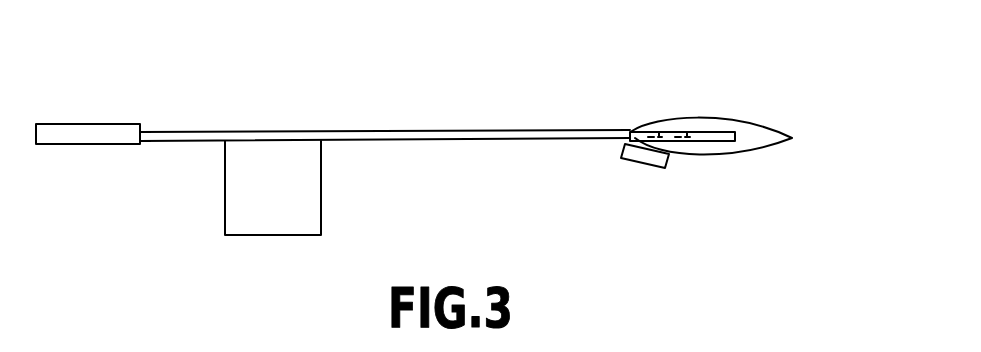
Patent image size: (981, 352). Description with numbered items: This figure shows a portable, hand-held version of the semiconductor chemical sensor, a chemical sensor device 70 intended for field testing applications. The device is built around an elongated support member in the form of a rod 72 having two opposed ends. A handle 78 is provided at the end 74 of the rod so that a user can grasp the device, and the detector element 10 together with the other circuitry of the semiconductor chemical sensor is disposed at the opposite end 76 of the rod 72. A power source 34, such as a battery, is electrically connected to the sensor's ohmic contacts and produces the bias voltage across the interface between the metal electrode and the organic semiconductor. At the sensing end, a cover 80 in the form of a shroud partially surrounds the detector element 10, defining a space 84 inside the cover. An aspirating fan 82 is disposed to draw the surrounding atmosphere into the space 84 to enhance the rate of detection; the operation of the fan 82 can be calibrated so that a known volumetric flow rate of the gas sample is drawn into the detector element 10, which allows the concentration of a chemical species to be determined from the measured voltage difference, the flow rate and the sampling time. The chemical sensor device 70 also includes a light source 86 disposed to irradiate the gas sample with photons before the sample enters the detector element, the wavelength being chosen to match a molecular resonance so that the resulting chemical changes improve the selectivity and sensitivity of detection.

The chemical sensor device 70 is at (477, 61).
The handle 78 is at (60, 124).
The end 74 is at (142, 132).
The rod 72 is at (490, 141).
The power source 34 is at (265, 220).
The end 76 is at (722, 145).
The cover 80 is at (763, 123).
The space 84 is at (757, 142).
The aspirating fan 82 is at (650, 167).
The detector element 10 is at (660, 132).
The light source 86 is at (687, 132).